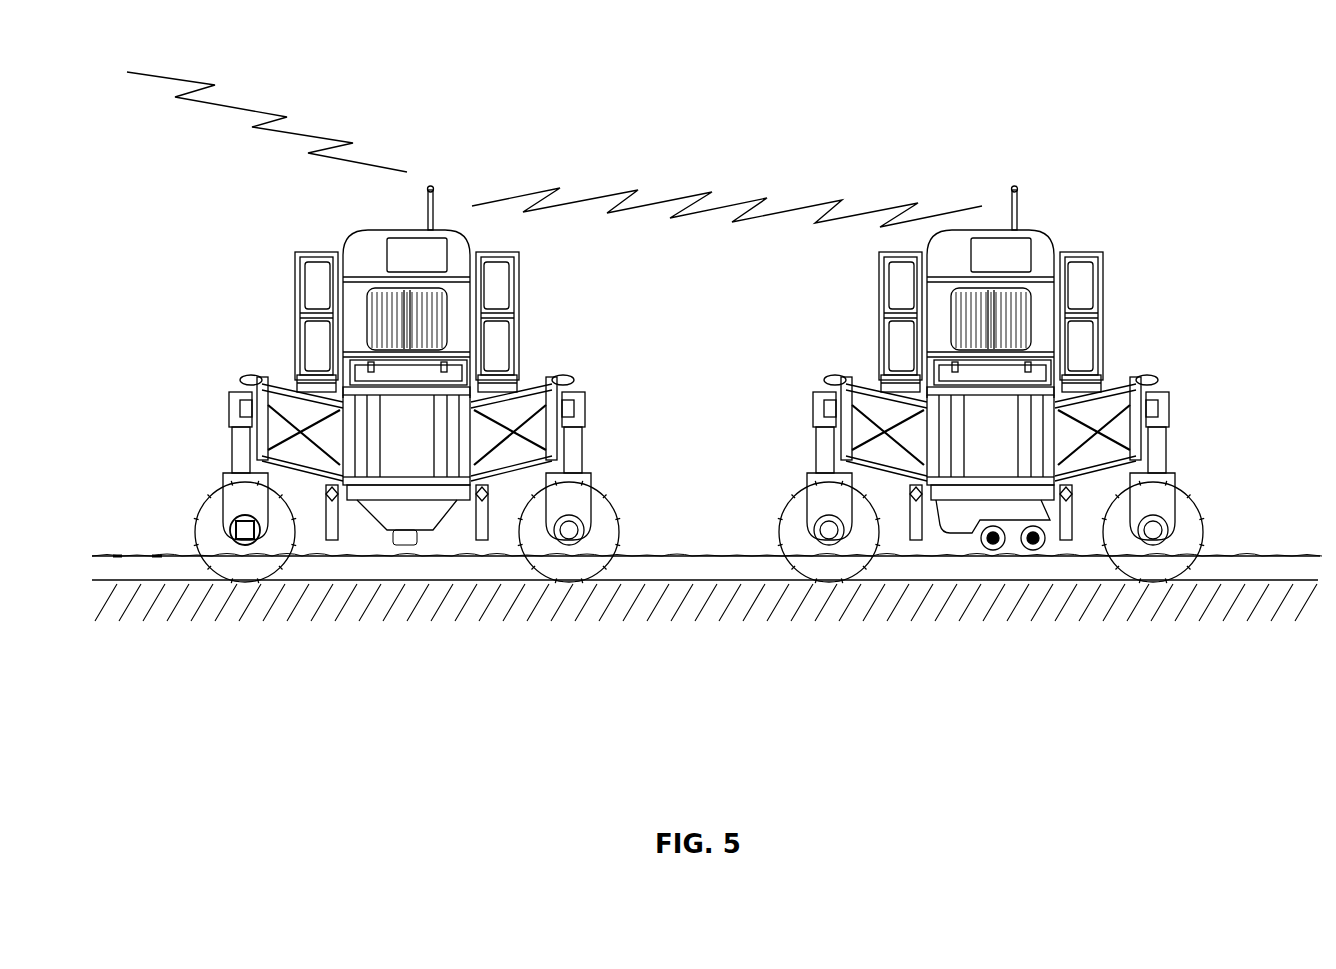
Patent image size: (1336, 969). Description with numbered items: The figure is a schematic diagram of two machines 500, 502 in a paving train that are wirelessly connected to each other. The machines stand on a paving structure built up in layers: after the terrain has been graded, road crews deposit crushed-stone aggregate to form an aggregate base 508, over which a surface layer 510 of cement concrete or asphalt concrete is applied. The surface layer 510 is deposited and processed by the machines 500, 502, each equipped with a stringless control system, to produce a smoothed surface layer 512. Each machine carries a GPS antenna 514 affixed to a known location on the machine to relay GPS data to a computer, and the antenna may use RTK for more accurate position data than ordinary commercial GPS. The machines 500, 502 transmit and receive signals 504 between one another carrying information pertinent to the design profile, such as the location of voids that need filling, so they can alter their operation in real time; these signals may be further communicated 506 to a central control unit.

The machine 500 is at (297, 300).
The machine 502 is at (1092, 290).
The signals 504 is at (843, 200).
The communication to central control unit 506 is at (352, 145).
The aggregate base 508 is at (262, 608).
The surface layer 510 is at (447, 560).
The smoothed surface layer 512 is at (1275, 568).
The GPS antenna 514 is at (433, 193).